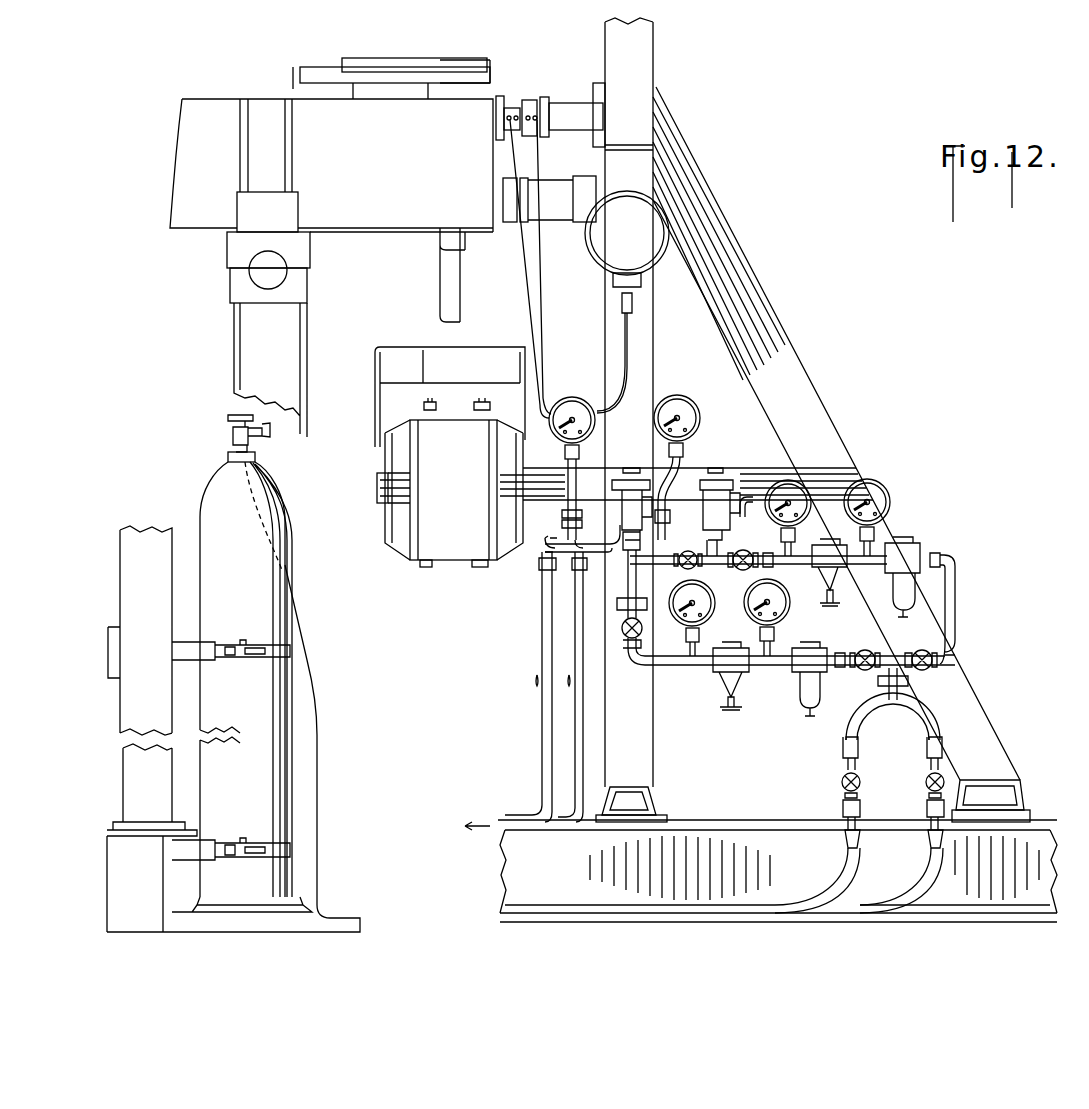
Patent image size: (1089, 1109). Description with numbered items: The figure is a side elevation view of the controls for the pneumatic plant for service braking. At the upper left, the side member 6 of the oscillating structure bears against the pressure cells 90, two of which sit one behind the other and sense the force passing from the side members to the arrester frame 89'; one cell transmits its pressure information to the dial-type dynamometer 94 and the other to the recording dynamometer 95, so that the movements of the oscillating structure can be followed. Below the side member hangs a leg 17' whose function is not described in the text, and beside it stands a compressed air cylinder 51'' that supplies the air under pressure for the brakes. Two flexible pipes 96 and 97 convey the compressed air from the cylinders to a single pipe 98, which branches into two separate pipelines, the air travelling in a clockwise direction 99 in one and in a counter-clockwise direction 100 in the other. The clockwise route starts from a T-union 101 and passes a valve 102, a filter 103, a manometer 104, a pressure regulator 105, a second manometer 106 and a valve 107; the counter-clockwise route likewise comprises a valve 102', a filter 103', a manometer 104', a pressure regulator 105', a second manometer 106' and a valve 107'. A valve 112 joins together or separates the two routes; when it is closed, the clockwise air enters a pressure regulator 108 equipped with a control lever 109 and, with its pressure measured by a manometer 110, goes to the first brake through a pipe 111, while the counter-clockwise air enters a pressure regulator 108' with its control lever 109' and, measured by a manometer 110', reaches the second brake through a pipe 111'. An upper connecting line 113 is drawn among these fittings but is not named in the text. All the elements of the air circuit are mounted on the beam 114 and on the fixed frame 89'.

The side member 6 is at (183, 218).
The support leg 17' is at (238, 370).
The cylinder 51'' is at (235, 673).
The arrester frame 89' is at (836, 433).
The pressure cell 90 is at (549, 65).
The dial-type dynamometer 94 is at (447, 548).
The recording dynamometer 95 is at (608, 258).
The flexible pipe 96 is at (841, 866).
The flexible pipe 97 is at (922, 872).
The single pipe 98 is at (907, 697).
The clockwise direction 99 is at (770, 680).
The counter-clockwise direction 100 is at (910, 530).
The T-union 101 is at (907, 636).
The valve 102 is at (866, 649).
The valve 102' is at (988, 656).
The filter 103 is at (816, 696).
The filter 103' is at (947, 586).
The manometer 104 is at (753, 617).
The manometer 104' is at (898, 510).
The pressure regulator 105 is at (711, 681).
The pressure regulator 105' is at (838, 588).
The second manometer 106 is at (686, 618).
The second manometer 106' is at (800, 494).
The valve 107 is at (571, 607).
The valve 107' is at (716, 571).
The pressure regulator 108 is at (554, 520).
The pressure regulator 108' is at (722, 482).
The control lever 109 is at (598, 493).
The control lever 109' is at (724, 495).
The manometer 110 is at (569, 451).
The manometer 110' is at (690, 451).
The pipe 111 is at (527, 679).
The pipe 111' is at (542, 681).
The valve 112 is at (730, 556).
The upper pipe line 113 is at (625, 563).
The beam 114 is at (848, 467).